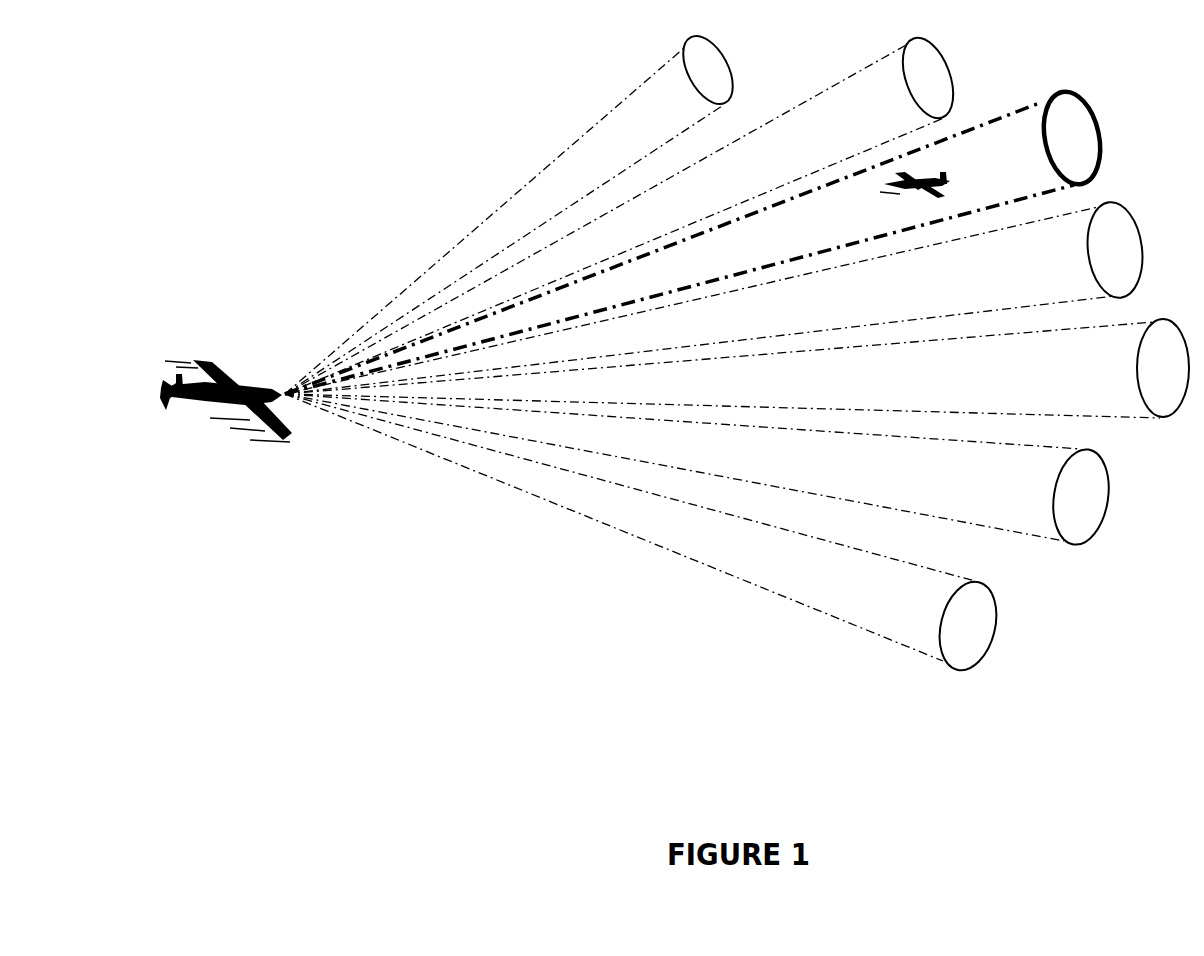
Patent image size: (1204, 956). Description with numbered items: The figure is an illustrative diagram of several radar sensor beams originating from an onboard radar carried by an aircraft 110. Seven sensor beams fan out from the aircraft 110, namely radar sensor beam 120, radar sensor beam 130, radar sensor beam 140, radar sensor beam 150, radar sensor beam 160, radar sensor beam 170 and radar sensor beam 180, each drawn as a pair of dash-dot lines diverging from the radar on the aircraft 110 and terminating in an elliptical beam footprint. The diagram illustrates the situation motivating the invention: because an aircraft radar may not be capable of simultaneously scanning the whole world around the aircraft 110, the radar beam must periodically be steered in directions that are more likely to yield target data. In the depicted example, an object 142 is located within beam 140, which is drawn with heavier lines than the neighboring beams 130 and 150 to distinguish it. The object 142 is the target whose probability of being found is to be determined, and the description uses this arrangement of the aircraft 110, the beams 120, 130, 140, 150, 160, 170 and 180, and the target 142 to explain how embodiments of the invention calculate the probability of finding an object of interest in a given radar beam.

The aircraft 110 is at (210, 366).
The radar sensor beam 120 is at (659, 132).
The radar sensor beam 130 is at (869, 131).
The radar sensor beam 140 is at (1029, 177).
The object 142 is at (938, 176).
The radar sensor beam 150 is at (1032, 276).
The radar sensor beam 160 is at (1095, 377).
The radar sensor beam 170 is at (1030, 502).
The radar sensor beam 180 is at (920, 615).